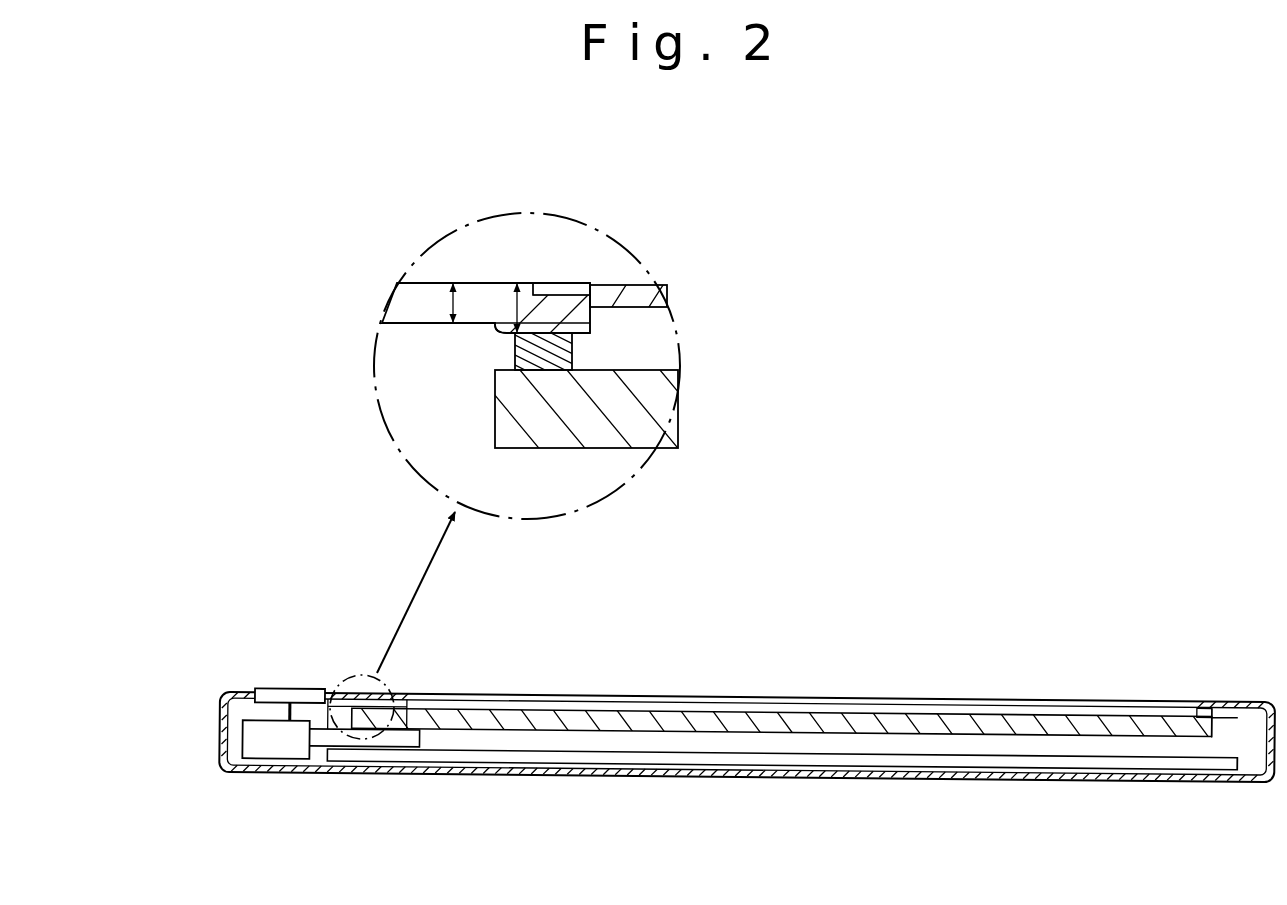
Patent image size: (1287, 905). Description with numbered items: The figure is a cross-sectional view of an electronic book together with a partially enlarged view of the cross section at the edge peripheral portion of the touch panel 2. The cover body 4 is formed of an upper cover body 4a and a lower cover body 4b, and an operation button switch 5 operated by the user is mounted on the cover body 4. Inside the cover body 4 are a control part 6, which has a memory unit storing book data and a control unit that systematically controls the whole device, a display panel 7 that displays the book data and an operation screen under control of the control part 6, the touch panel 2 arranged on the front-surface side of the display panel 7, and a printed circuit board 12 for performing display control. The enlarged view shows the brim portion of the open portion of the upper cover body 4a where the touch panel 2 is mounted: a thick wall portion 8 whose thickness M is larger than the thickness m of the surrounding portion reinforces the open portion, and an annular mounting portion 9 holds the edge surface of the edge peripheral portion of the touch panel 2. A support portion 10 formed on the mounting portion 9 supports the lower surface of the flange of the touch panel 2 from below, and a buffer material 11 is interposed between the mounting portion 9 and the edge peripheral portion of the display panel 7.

The touch panel 2 is at (1033, 692).
The cover body 4 is at (115, 642).
The upper cover body 4a is at (240, 690).
The lower cover body 4b is at (218, 745).
The operation button switch 5 is at (293, 690).
The control part 6 is at (277, 750).
The display panel 7 is at (483, 732).
The thick wall portion 8 is at (493, 337).
The mounting portion 9 is at (570, 302).
The support portion 10 is at (578, 287).
The buffer material 11 is at (572, 348).
The printed circuit board 12 is at (1228, 757).
The thickness of portion around thick wall portion m is at (453, 305).
The thickness of thick wall portion M is at (515, 308).